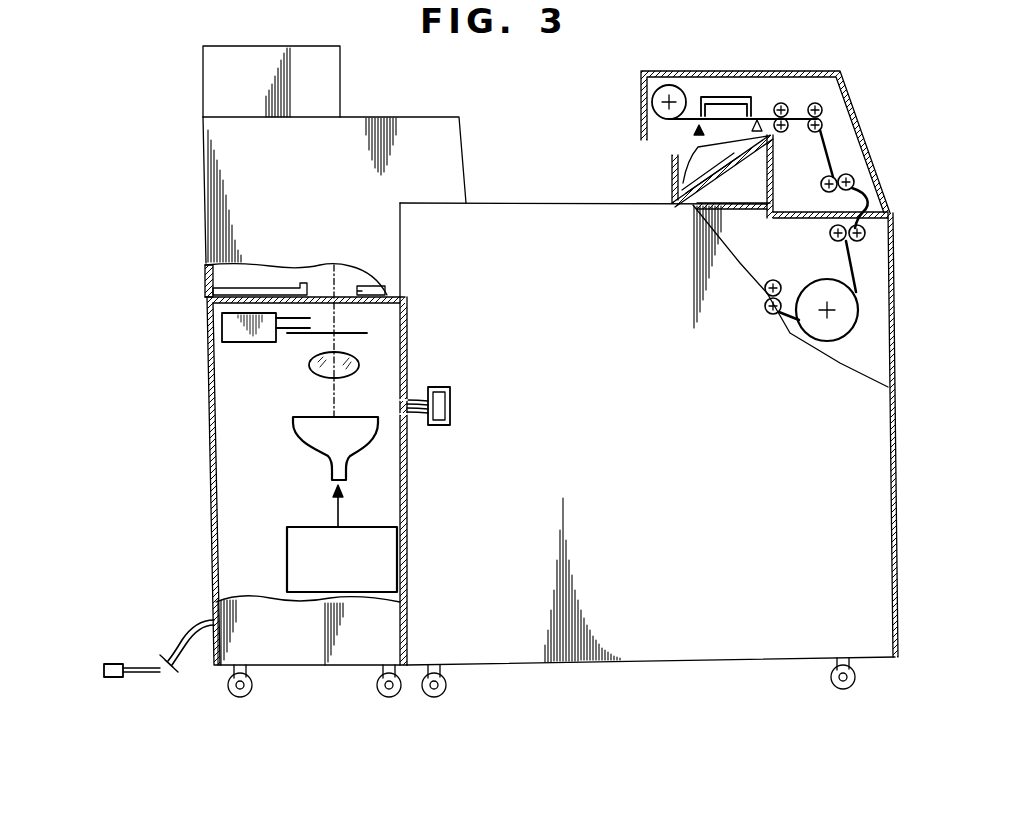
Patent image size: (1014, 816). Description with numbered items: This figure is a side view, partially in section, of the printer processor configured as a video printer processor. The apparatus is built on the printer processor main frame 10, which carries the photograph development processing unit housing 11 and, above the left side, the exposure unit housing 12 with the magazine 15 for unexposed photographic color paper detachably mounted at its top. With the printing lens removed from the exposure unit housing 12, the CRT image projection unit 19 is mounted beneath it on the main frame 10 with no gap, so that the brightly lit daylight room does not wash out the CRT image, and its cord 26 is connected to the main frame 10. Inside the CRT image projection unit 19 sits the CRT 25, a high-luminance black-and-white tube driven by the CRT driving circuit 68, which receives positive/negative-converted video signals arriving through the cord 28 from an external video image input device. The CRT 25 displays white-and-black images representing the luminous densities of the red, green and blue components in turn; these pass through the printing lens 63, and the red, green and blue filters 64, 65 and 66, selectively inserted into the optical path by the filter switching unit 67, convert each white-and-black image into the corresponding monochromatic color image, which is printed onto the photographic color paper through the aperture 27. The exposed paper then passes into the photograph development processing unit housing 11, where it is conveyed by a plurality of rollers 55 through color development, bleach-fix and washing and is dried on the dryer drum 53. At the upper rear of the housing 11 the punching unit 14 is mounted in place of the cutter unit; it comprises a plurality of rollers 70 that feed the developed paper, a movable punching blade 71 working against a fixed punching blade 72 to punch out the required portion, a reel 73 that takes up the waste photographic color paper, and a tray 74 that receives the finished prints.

The printer processor main frame 10 is at (905, 513).
The photograph development processing unit housing 11 is at (655, 645).
The exposure unit housing 12 is at (220, 170).
The punching unit 14 is at (859, 117).
The magazine 15 is at (222, 83).
The CRT image projection unit 19 is at (209, 460).
The CRT 25 is at (327, 436).
The cord 26 is at (418, 414).
The aperture 27 is at (350, 290).
The cord 28 is at (192, 628).
The dryer drum 53 is at (828, 336).
The rollers 55 is at (773, 280).
The printing lens 63 is at (350, 367).
The red filter 64 is at (357, 334).
The green filter 65 is at (297, 330).
The blue filter 66 is at (291, 320).
The filter switching unit 67 is at (228, 329).
The CRT driving circuit 68 is at (287, 560).
The rollers 70 is at (815, 103).
The movable punching blade 71 is at (727, 97).
The fixed punching blade 72 is at (758, 120).
The reel 73 is at (669, 86).
The tray 74 is at (672, 170).